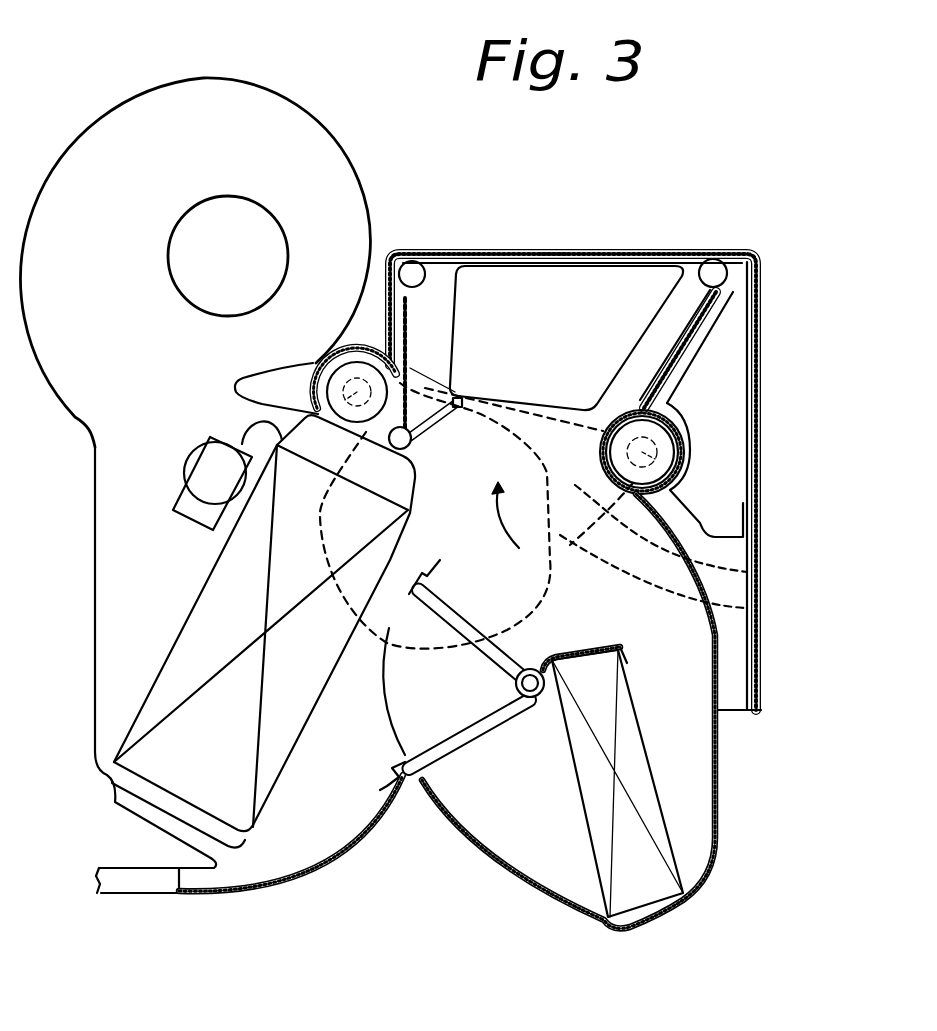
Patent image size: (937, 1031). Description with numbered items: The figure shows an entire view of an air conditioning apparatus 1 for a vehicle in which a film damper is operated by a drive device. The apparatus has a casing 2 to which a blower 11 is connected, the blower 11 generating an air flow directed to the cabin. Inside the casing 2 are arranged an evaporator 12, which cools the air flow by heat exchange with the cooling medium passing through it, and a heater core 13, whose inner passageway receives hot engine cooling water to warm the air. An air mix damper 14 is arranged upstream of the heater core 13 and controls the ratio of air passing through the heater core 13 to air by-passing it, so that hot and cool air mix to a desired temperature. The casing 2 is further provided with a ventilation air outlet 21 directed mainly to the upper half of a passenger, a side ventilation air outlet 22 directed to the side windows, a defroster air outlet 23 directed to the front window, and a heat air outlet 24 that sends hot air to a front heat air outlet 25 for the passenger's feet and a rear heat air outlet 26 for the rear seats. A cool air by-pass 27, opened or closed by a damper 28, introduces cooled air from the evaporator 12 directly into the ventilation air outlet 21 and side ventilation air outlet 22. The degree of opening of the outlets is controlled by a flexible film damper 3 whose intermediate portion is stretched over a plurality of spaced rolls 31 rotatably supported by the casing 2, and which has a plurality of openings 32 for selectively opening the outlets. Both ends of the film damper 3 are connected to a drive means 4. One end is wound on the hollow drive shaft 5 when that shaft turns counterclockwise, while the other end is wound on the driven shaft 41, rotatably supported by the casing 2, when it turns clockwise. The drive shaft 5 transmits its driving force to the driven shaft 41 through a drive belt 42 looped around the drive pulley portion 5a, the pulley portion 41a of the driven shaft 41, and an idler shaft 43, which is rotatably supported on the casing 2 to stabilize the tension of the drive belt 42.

The air conditioning apparatus 1 is at (111, 50).
The casing 2 is at (720, 845).
The film damper 3 is at (647, 250).
The drive means 4 is at (708, 438).
The drive shaft 5 is at (745, 512).
The drive pulley portion 5a is at (680, 470).
The blower 11 is at (250, 123).
The evaporator 12 is at (148, 765).
The heater core 13 is at (635, 888).
The air mix damper 14 is at (447, 808).
The ventilation air outlet 21 is at (507, 250).
The side ventilation air outlet 22 is at (588, 296).
The defroster air outlet 23 is at (688, 250).
The heat air outlet 24 is at (710, 335).
The front heat air outlet 25 is at (718, 493).
The rear heat air outlet 26 is at (737, 740).
The cool air by-pass 27 is at (353, 362).
The damper 28 is at (432, 394).
The rolls 31 is at (411, 261).
The openings 32 is at (540, 254).
The driven shaft 41 is at (320, 358).
The pulley portion 41a is at (303, 360).
The drive belt 42 is at (750, 607).
The idler shaft 43 is at (750, 570).